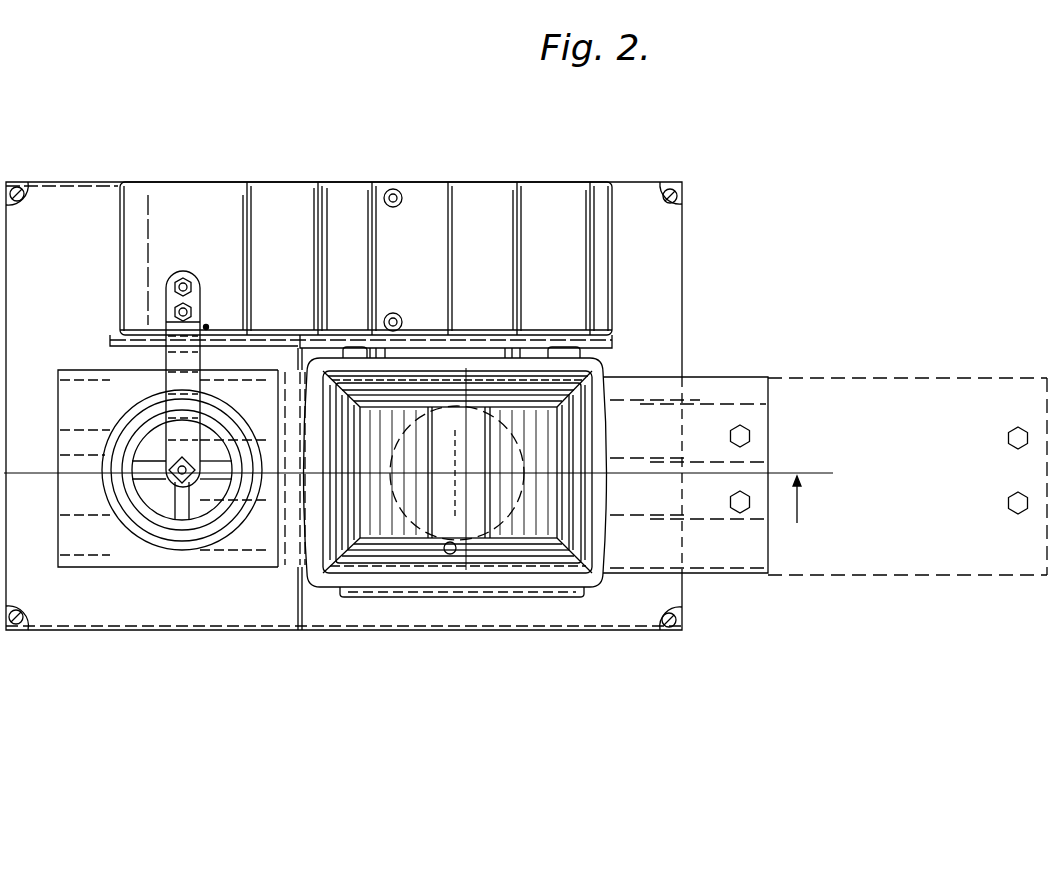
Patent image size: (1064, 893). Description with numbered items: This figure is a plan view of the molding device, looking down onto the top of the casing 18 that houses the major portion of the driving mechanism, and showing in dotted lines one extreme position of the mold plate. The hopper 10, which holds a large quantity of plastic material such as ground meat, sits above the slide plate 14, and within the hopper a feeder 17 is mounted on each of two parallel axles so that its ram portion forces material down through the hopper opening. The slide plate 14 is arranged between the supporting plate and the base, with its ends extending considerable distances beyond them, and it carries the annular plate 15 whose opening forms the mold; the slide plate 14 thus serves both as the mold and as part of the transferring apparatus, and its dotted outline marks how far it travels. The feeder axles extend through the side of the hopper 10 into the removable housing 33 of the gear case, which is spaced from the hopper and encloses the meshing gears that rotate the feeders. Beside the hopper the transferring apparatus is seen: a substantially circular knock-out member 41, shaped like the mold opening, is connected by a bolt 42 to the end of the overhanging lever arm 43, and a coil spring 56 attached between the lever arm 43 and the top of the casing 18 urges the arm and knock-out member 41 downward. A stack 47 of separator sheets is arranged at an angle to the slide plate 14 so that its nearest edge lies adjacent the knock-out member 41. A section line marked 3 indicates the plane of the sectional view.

The section line 3- 3 is at (795, 499).
The hopper 10 is at (598, 365).
The slide plate 14 is at (708, 560).
The annular plate 15 is at (172, 472).
The feeder 17 is at (500, 481).
The casing 18 is at (674, 248).
The removable housing 33 is at (536, 186).
The knock-out member 41 is at (222, 432).
The bolt 42 is at (176, 476).
The lever arm 43 is at (176, 358).
The stack 47 is at (278, 542).
The coil spring 56 is at (208, 325).